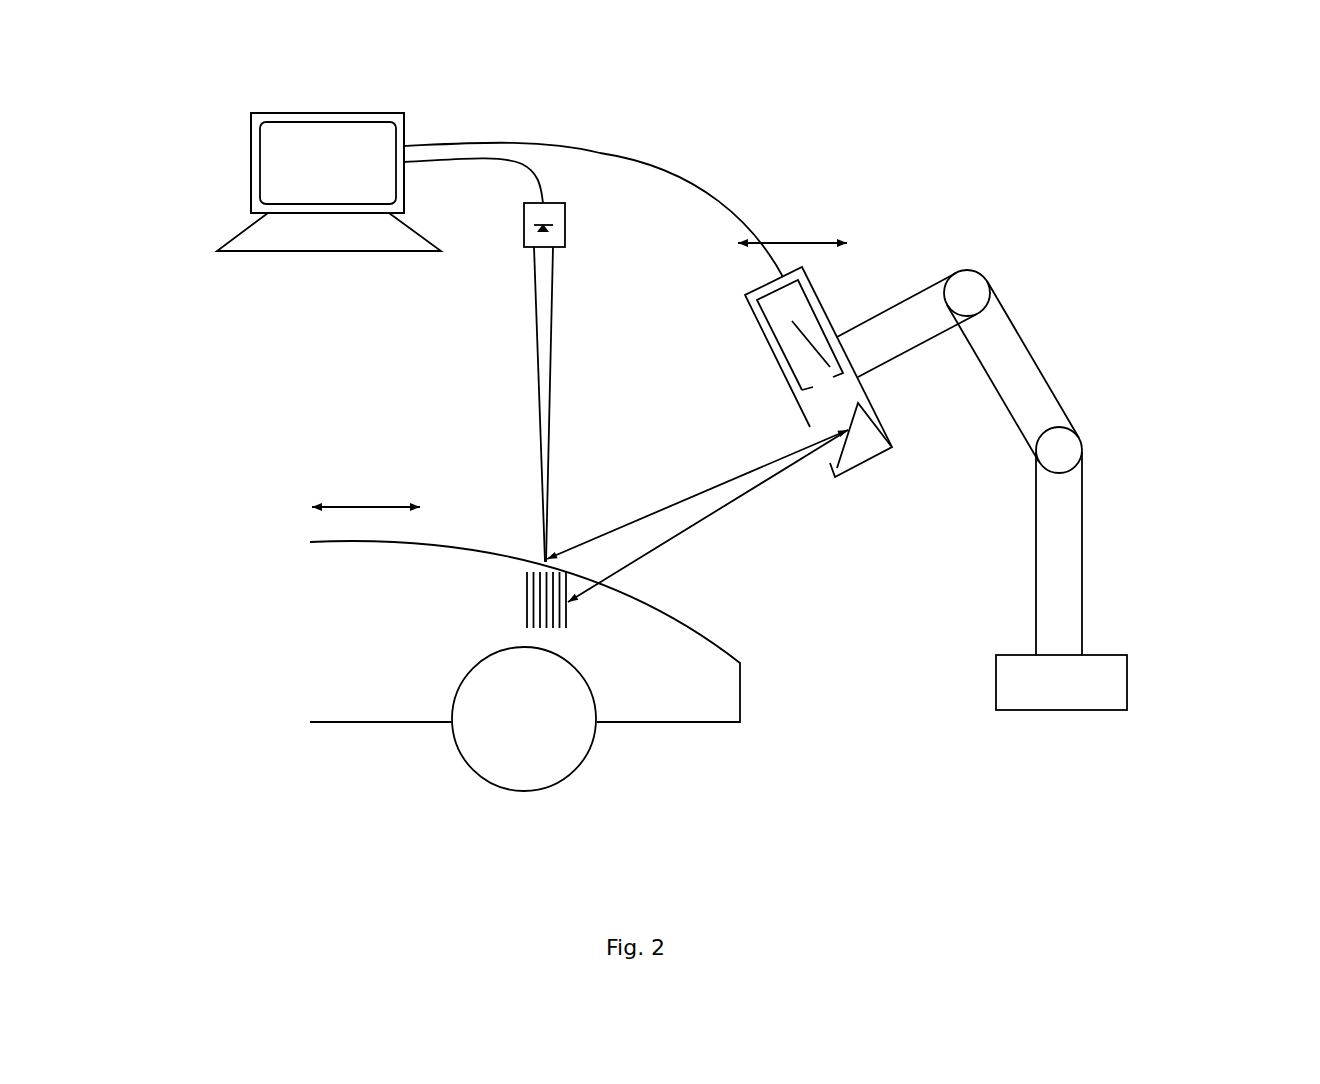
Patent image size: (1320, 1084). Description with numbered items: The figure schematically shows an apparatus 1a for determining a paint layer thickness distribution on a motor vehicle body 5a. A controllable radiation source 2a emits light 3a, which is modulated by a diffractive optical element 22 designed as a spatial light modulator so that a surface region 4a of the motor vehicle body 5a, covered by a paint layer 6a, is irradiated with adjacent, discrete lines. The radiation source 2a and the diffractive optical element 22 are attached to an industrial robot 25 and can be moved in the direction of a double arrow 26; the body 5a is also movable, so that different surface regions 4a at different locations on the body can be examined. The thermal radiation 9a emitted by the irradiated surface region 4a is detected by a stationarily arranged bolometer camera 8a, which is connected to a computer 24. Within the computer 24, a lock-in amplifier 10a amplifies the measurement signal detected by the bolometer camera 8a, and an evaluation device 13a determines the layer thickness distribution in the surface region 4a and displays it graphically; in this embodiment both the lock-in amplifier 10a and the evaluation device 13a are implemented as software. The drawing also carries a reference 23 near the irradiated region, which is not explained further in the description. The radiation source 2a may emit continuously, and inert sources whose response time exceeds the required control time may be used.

The apparatus 1a is at (1150, 187).
The computer 24 is at (356, 146).
The lock-in amplifier 10a is at (377, 133).
The evaluation device 13a is at (350, 137).
The bolometer camera 8a is at (555, 212).
The thermal radiation 9a is at (533, 302).
The double arrow 26 is at (360, 502).
The controllable radiation source 2a is at (782, 313).
The light 3a is at (803, 345).
The diffractive optical element 22 is at (855, 413).
The industrial robot 25 is at (1015, 367).
The layer 6a is at (561, 628).
The motor vehicle body 5a is at (677, 655).
The surface region 4a is at (450, 685).
The joint region 23 is at (520, 615).